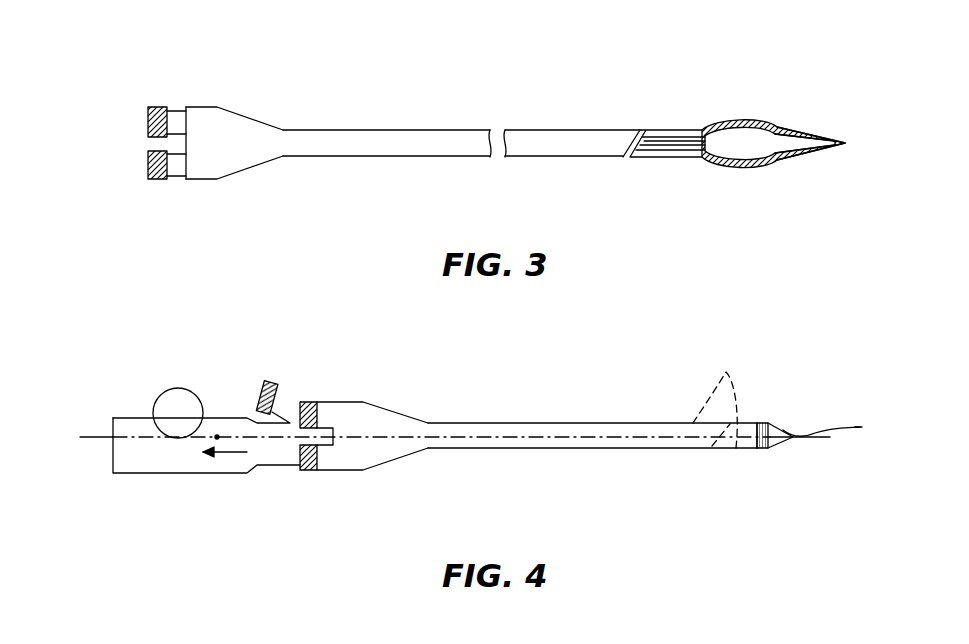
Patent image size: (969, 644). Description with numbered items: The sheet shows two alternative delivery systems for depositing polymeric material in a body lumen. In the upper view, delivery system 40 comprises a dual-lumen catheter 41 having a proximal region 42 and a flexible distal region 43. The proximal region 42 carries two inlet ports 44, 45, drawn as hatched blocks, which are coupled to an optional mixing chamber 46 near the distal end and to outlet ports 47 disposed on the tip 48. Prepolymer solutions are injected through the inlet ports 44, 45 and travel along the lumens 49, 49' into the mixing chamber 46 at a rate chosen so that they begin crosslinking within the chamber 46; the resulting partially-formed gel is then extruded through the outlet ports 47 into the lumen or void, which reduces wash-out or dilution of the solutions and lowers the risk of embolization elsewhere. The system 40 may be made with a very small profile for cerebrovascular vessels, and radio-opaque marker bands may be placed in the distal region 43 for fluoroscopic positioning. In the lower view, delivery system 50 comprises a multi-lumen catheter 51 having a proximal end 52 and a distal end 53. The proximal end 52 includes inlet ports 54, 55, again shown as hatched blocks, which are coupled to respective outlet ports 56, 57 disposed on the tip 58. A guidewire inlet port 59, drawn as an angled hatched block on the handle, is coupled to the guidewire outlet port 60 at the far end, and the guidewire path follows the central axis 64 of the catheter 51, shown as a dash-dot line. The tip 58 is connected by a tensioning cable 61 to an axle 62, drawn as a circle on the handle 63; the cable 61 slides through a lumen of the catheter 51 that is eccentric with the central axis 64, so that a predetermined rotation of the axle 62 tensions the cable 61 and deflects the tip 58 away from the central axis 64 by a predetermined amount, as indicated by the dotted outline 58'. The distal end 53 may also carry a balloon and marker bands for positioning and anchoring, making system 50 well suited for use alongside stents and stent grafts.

In FIG. 3, the delivery system 40 is at (424, 66).
In FIG. 3, the dual-lumen catheter 41 is at (333, 150).
In FIG. 3, the proximal region 42 is at (210, 80).
In FIG. 3, the flexible distal region 43 is at (709, 93).
In FIG. 3, the inlet port 44 is at (148, 117).
In FIG. 3, the inlet port 45 is at (148, 173).
In FIG. 3, the mixing chamber 46 is at (740, 137).
In FIG. 3, the outlet ports 47 is at (783, 130).
In FIG. 3, the tip 48 is at (818, 152).
In FIG. 3, the lumen 49 is at (665, 113).
In FIG. 3, the lumen 49' is at (669, 177).
In FIG. 4, the delivery system 50 is at (447, 380).
In FIG. 4, the multi-lumen catheter 51 is at (530, 422).
In FIG. 4, the proximal end 52 is at (345, 471).
In FIG. 4, the distal end 53 is at (744, 466).
In FIG. 4, the inlet port 54 is at (307, 401).
In FIG. 4, the inlet port 55 is at (307, 471).
In FIG. 4, the outlet port 56 is at (767, 428).
In FIG. 4, the outlet port 57 is at (767, 448).
In FIG. 4, the tip 58 is at (821, 411).
In FIG. 4, the deflected tip 58' is at (702, 400).
In FIG. 4, the guidewire inlet port 59 is at (262, 396).
In FIG. 4, the guidewire outlet port 60 is at (860, 428).
In FIG. 4, the tensioning cable 61 is at (463, 440).
In FIG. 4, the axle 62 is at (153, 405).
In FIG. 4, the handle 63 is at (172, 465).
In FIG. 4, the central axis 64 is at (87, 440).